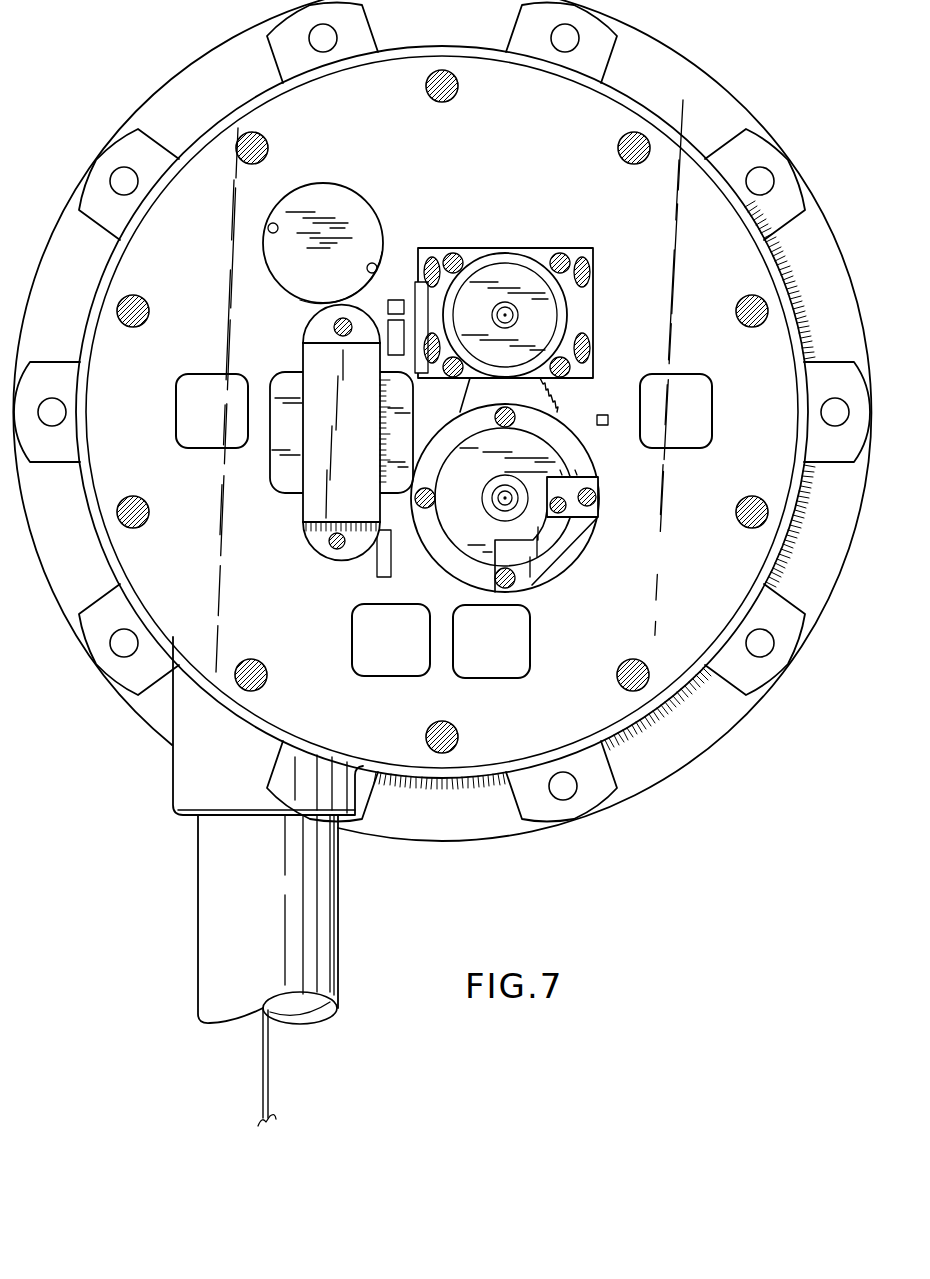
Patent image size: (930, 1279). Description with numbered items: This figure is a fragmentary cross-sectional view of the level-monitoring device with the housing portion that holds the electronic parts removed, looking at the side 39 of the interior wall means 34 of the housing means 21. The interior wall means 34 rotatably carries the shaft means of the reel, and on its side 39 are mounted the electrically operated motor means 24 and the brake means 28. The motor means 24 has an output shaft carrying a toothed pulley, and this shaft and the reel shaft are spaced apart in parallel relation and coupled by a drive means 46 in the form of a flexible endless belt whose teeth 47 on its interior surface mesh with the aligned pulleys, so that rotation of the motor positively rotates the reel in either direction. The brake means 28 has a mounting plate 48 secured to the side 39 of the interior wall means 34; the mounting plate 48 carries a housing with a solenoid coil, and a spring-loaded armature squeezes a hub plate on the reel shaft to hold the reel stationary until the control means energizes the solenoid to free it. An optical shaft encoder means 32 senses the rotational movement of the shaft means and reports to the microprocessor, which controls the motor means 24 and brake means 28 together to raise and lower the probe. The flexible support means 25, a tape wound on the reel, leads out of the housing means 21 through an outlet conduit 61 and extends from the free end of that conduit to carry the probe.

The housing means 21 is at (730, 80).
The side of the interior wall means 39 is at (148, 268).
The optical shaft encoder means 32 is at (360, 212).
The motor means 24 is at (505, 273).
The teeth 47 is at (478, 394).
The drive means 46 is at (557, 400).
The interior wall means 34 is at (308, 600).
The brake means 28 is at (472, 535).
The mounting plate 48 is at (573, 450).
The outlet conduit 61 is at (198, 937).
The flexible support means 25 is at (263, 1075).